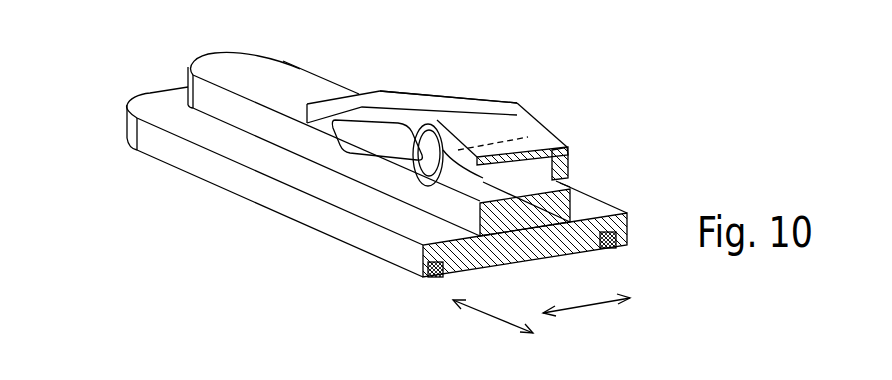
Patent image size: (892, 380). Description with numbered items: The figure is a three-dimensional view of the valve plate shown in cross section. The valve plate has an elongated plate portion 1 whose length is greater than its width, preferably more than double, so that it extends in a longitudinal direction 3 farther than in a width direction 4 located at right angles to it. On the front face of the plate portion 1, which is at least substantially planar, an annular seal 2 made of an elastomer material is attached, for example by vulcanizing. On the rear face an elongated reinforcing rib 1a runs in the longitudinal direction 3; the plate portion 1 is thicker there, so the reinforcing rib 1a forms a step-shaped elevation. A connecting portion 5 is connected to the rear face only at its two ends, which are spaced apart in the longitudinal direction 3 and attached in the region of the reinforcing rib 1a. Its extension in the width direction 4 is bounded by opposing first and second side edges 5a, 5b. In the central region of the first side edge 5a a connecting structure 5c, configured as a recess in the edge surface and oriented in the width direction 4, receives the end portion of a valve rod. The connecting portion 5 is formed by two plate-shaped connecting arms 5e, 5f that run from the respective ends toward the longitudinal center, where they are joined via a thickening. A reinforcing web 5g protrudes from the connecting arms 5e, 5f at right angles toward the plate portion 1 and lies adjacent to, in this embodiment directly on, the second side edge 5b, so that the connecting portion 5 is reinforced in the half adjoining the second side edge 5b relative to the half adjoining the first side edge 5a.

The plate portion 1 is at (143, 155).
The reinforcing rib 1a is at (207, 100).
The seal 2 is at (437, 277).
The longitudinal direction 3 is at (493, 317).
The width direction 4 is at (588, 302).
The connecting portion 5 is at (452, 163).
The first side edge 5a is at (375, 120).
The second side edge 5b is at (472, 100).
The connecting structure 5c is at (432, 163).
The connecting arm 5e is at (473, 158).
The connecting arm 5f is at (414, 107).
The reinforcing web 5g is at (568, 165).